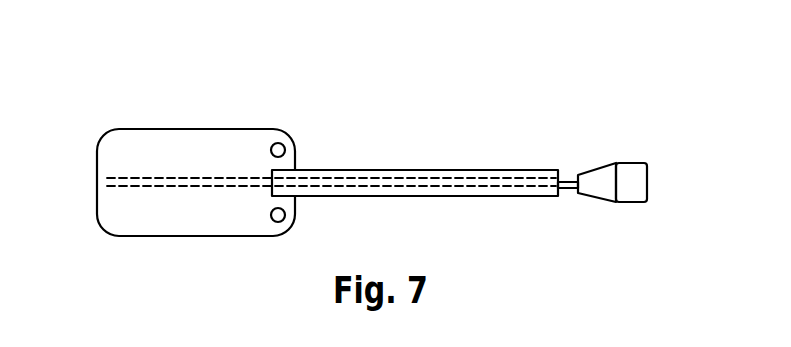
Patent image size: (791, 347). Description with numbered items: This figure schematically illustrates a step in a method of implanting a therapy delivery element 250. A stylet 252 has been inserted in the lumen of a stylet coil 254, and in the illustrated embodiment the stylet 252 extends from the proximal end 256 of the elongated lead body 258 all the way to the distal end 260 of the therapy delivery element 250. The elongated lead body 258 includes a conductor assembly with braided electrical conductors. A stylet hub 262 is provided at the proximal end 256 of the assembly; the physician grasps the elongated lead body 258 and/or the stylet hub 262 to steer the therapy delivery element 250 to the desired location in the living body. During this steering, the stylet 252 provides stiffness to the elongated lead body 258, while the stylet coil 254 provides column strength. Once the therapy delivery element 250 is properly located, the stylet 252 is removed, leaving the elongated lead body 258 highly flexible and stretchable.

The therapy delivery element 250 is at (303, 141).
The stylet 252 is at (571, 183).
The stylet coil 254 is at (447, 176).
The proximal end 256 is at (561, 182).
The elongated lead body 258 is at (385, 170).
The distal end 260 is at (98, 208).
The stylet hub 262 is at (632, 163).